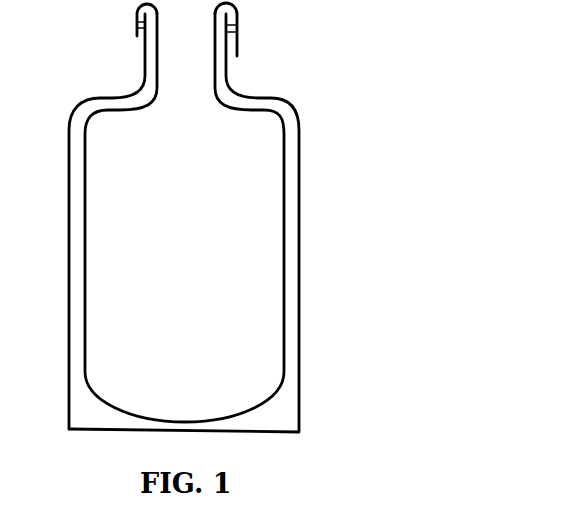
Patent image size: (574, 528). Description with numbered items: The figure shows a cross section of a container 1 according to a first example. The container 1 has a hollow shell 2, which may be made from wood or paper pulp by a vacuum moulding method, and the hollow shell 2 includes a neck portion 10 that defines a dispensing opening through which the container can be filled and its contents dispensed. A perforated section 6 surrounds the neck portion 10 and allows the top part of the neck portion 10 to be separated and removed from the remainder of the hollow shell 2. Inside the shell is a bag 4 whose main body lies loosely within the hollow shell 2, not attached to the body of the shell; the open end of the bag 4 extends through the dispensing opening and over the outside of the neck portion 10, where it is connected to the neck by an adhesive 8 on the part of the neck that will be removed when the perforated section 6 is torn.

The container 1 is at (197, 217).
The hollow shell 2 is at (68, 158).
The bag 4 is at (285, 165).
The perforated section 6 is at (139, 35).
The adhesive 8 is at (238, 29).
The neck portion 10 is at (236, 55).